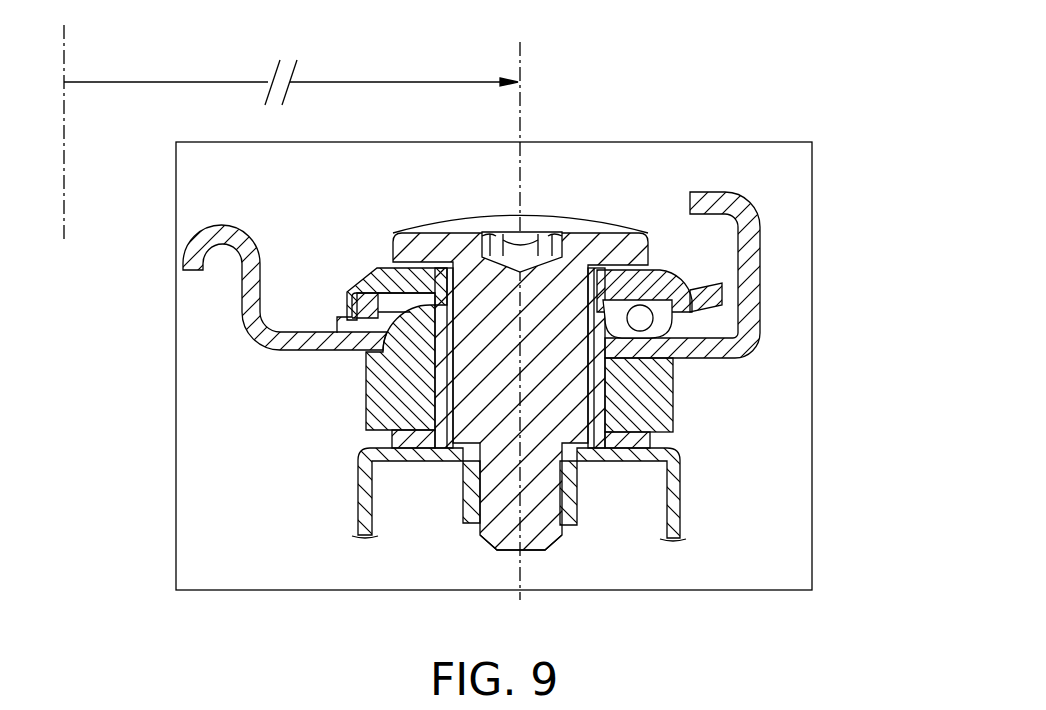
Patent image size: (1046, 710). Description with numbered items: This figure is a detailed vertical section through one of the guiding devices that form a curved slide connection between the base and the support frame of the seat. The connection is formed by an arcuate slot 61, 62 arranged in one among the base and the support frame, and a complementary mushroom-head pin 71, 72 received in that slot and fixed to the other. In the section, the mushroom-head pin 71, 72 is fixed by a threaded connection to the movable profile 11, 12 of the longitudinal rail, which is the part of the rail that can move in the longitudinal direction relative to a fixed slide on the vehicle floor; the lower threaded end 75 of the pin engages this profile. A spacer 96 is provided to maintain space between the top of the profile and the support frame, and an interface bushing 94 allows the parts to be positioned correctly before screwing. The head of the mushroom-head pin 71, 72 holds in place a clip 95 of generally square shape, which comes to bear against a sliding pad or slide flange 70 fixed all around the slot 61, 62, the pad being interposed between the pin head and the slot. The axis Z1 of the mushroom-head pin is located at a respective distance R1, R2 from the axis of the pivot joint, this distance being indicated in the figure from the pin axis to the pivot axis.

The movable profile 11 is at (469, 494).
The movable profile 12 is at (358, 512).
The arcuate slot 61 is at (564, 275).
The arcuate slot 62 is at (655, 331).
The sliding pad 70 is at (348, 322).
The mushroom-head pin 71 is at (565, 360).
The mushroom-head pin 72 is at (565, 360).
The threaded end of screw 75 is at (505, 533).
The interface bushing 94 is at (595, 402).
The clip 95 is at (645, 300).
The spacer 96 is at (650, 428).
The axis Z1 is at (65, 58).
The distance R1 is at (291, 78).
The distance R2 is at (291, 78).